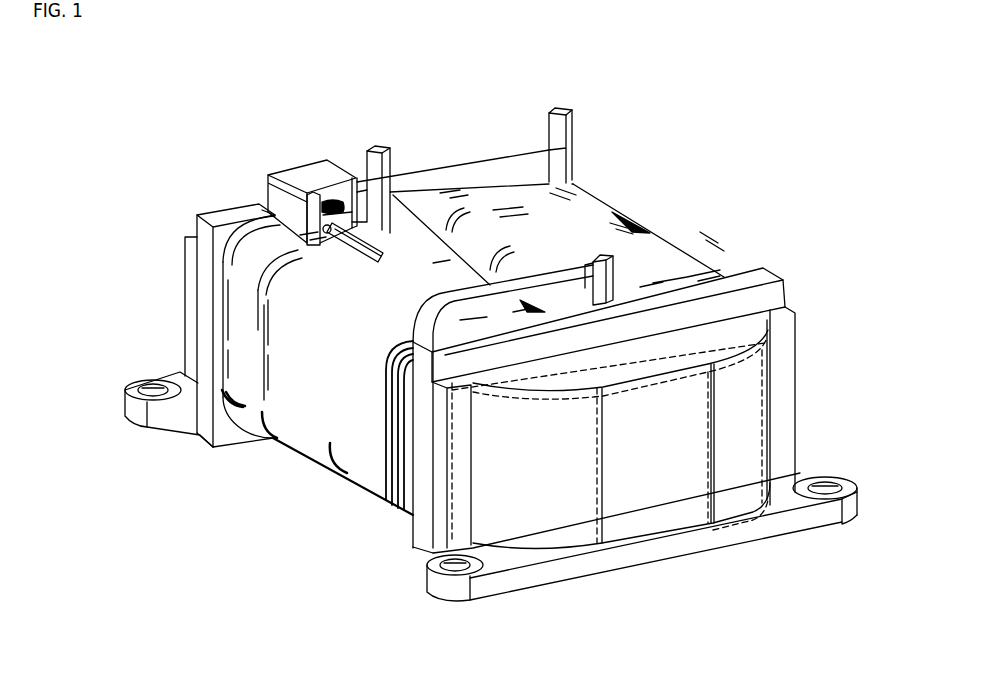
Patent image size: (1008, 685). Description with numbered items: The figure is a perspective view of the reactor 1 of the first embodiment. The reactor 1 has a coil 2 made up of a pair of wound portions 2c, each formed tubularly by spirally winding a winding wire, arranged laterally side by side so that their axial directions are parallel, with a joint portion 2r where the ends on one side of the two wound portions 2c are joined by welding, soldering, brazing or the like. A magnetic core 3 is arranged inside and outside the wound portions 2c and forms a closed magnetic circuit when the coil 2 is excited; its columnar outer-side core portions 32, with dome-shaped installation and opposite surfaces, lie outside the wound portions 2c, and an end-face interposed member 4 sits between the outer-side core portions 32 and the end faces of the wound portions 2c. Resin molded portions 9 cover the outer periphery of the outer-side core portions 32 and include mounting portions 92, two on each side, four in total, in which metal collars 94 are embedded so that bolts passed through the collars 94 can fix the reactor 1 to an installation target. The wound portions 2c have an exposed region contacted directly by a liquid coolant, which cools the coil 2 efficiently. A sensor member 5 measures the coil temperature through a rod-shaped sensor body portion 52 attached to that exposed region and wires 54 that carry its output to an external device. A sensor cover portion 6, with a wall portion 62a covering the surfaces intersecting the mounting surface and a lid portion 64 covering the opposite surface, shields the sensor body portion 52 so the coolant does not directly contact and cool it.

The reactor 1 is at (630, 130).
The coil 2 is at (622, 212).
The wound portions 2c is at (652, 258).
The joint portion 2r is at (615, 272).
The magnetic core 3 is at (604, 453).
The outer-side core portions 32 is at (647, 497).
The end-face interposed member 4 is at (205, 212).
The sensor member 5 is at (347, 195).
The sensor body portion 52 is at (340, 200).
The wires 54 is at (378, 236).
The sensor cover portion 6 is at (305, 166).
The wall portion 62a is at (260, 207).
The lid portion 64 is at (318, 166).
The resin molded portions 9 is at (183, 280).
The mounting portions 92 is at (137, 410).
The collars 94 is at (143, 375).